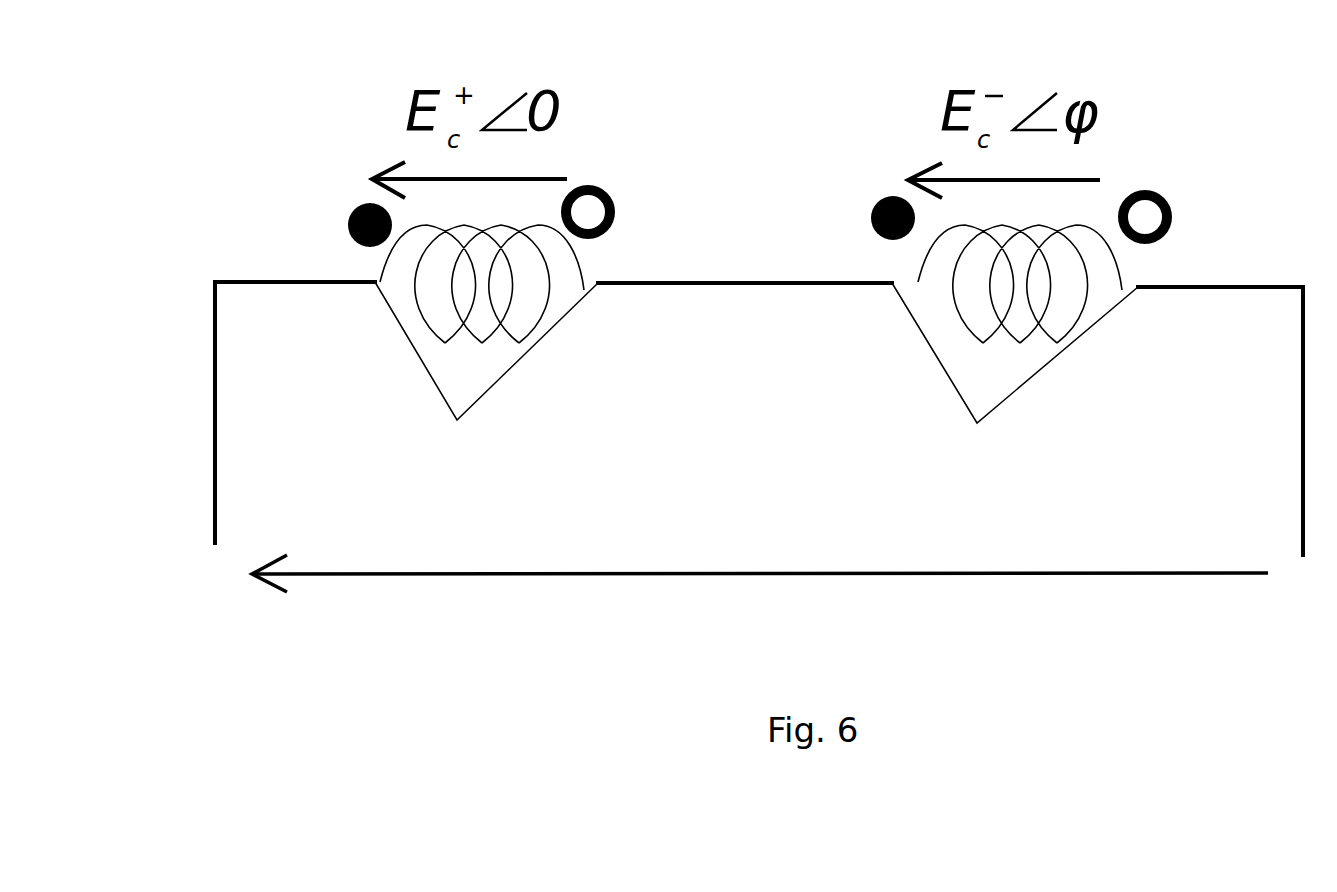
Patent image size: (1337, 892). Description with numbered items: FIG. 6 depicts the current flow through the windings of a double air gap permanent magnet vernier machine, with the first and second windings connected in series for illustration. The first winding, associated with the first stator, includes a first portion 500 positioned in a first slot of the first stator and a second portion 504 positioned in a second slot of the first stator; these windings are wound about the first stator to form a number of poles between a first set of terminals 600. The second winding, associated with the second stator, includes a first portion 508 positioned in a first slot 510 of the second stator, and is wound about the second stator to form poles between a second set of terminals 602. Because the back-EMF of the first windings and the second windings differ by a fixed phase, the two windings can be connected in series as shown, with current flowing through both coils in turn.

The first portion of the first winding 500 is at (607, 190).
The second portion of the first winding 504 is at (352, 207).
The first portion of the second winding 508 is at (1158, 190).
The first slot of the second plurality of slots 510 is at (878, 203).
The first set of terminals 600 is at (486, 339).
The second set of terminals 602 is at (1015, 339).